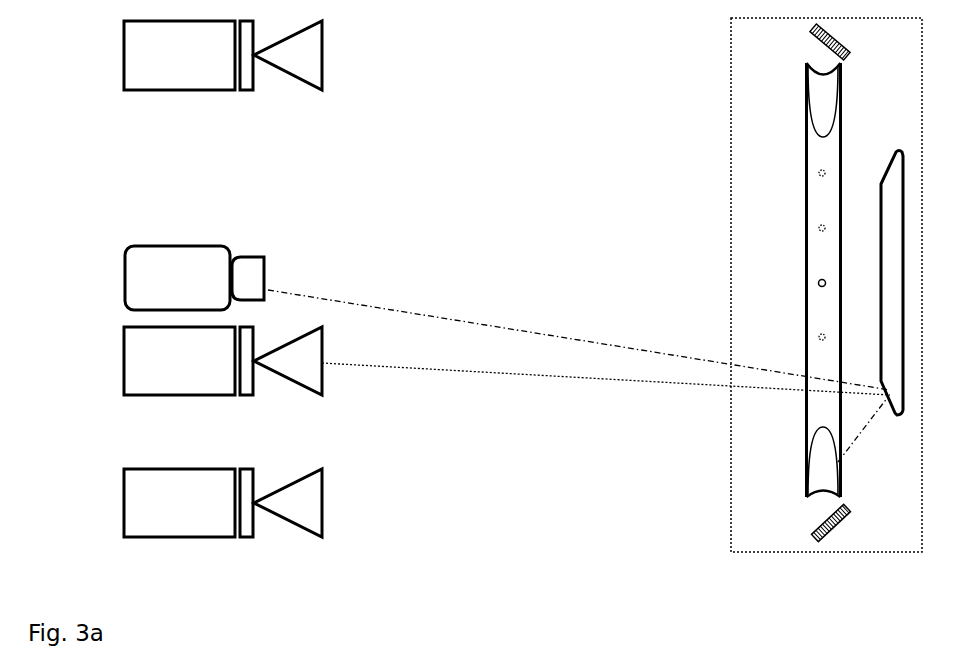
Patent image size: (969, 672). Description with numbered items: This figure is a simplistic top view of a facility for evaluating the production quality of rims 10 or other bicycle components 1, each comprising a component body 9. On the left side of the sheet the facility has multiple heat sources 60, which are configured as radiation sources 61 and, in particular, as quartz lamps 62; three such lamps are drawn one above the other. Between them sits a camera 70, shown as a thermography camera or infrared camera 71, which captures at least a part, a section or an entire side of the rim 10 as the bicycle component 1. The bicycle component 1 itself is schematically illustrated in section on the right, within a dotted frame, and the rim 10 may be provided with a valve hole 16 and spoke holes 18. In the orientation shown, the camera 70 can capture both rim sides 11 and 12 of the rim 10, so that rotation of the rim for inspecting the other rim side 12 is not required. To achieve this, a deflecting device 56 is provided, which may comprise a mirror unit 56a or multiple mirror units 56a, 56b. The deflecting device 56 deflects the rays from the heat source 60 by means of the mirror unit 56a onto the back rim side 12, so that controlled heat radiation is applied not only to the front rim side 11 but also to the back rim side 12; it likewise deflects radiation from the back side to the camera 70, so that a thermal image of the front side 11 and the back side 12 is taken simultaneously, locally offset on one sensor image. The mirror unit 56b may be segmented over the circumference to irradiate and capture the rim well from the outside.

The bicycle component 1 is at (822, 259).
The component body 9 is at (803, 259).
The rim 10 is at (787, 285).
The rim side 11 is at (799, 86).
The rim side 12 is at (849, 86).
The valve hole 16 is at (816, 282).
The spoke holes 18 is at (816, 175).
The deflecting device 56 is at (863, 283).
The mirror unit 56a is at (888, 170).
The mirror unit 56b is at (841, 47).
The heat sources 60 is at (215, 279).
The radiation sources 61 is at (170, 80).
The quartz lamps 62 is at (333, 55).
The cameras 70 is at (256, 258).
The infrared cameras 71 is at (170, 258).